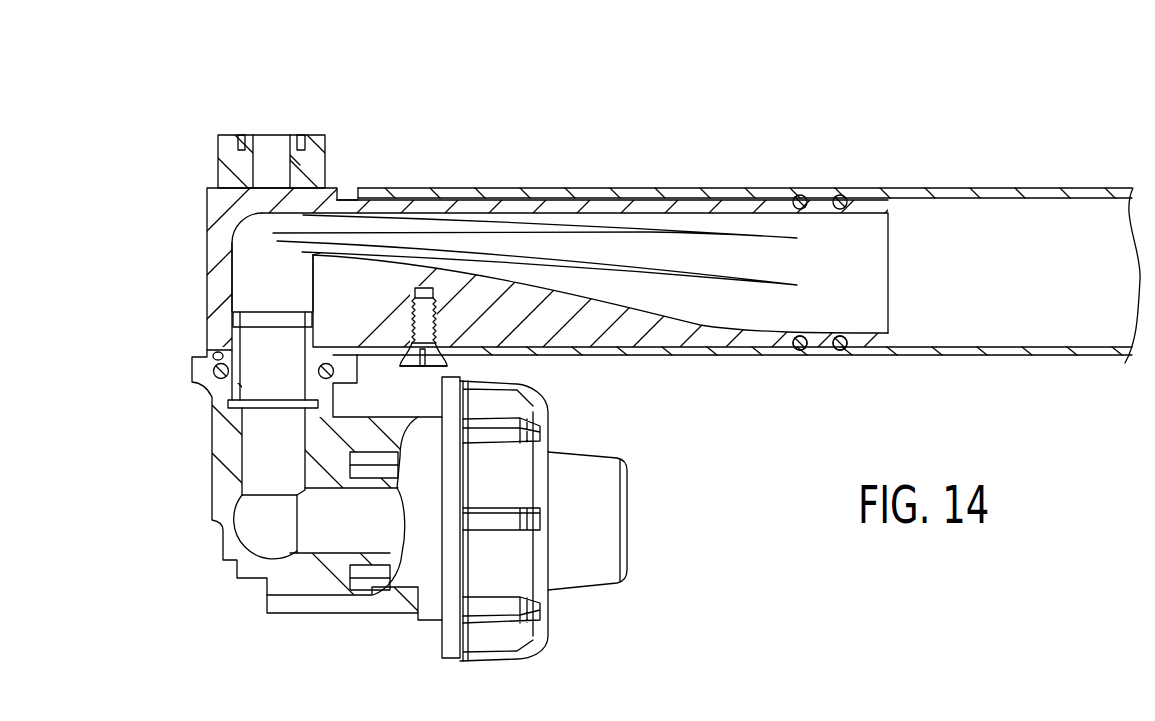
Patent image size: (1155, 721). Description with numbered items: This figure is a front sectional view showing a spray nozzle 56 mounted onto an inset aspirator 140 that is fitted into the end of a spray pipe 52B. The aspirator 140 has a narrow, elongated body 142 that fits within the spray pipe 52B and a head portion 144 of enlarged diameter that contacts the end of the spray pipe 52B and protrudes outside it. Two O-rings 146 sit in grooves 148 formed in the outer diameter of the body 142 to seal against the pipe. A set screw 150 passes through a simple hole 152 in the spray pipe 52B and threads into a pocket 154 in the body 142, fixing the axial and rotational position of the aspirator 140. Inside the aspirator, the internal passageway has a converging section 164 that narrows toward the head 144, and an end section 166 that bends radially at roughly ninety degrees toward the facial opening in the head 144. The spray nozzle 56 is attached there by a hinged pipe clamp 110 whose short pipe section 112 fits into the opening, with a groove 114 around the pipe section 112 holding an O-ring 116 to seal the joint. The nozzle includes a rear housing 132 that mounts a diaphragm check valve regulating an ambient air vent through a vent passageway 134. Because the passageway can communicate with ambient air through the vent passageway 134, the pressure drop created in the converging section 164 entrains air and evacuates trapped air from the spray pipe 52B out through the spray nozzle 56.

The hinged pipe clamp 110 is at (285, 133).
The inset aspirator 140 is at (500, 404).
The head portion 144 is at (373, 167).
The elongated body 142 is at (697, 236).
The spray pipe 52B is at (748, 238).
The converging section 164 is at (535, 250).
The end section 166 is at (272, 277).
The pocket 154 is at (432, 254).
The set screw 150 is at (387, 386).
The hole 152 is at (490, 369).
The grooves 148 is at (825, 272).
The O-rings 146 is at (820, 375).
The pipe section 112 is at (234, 407).
The groove 114 is at (186, 341).
The O-ring 116 is at (235, 395).
The spray nozzle 56 is at (384, 519).
The vent passageway 134 is at (273, 589).
The rear housing 132 is at (342, 635).